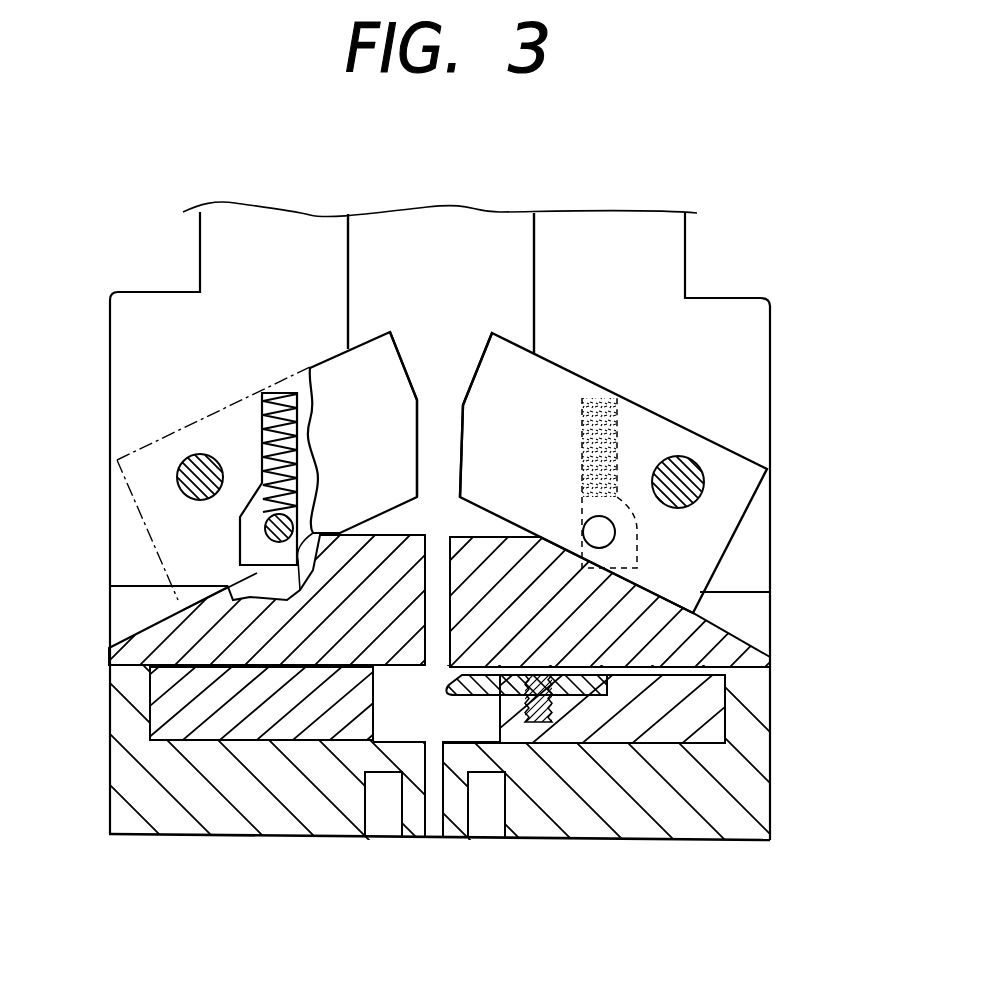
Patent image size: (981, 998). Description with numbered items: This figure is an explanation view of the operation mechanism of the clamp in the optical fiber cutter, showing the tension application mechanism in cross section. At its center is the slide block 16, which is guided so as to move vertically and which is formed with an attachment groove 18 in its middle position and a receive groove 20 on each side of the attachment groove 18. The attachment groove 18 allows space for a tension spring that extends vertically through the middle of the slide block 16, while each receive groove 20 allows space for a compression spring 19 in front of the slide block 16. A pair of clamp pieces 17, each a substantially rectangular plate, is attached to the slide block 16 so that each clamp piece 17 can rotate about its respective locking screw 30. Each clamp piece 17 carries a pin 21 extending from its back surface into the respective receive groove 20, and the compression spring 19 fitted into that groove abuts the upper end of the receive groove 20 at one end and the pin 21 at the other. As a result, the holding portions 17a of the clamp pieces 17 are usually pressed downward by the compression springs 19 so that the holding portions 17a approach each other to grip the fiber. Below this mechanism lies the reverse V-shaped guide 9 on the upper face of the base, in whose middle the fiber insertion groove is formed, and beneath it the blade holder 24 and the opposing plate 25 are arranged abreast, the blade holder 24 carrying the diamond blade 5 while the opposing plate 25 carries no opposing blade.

The blade 5 is at (473, 700).
The reverse V-shaped guide 9 is at (147, 638).
The slide block 16 is at (662, 247).
The clamp piece 17 is at (653, 435).
The holding portion 17a is at (402, 363).
The attachment groove 18 is at (473, 260).
The compression spring 19 is at (283, 380).
The receive groove 20 is at (263, 427).
The pin 21 is at (240, 527).
The blade holder 24 is at (717, 713).
The opposing plate 25 is at (153, 703).
The locking screw 30 is at (178, 470).